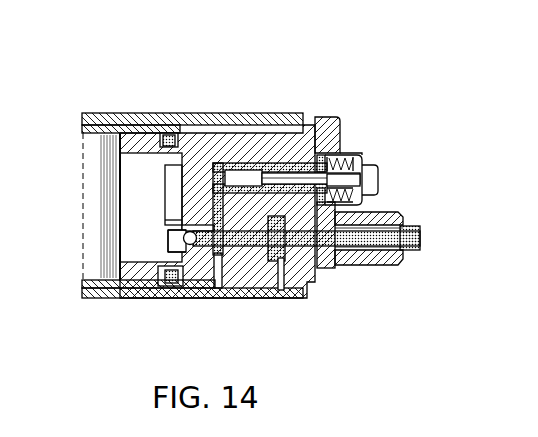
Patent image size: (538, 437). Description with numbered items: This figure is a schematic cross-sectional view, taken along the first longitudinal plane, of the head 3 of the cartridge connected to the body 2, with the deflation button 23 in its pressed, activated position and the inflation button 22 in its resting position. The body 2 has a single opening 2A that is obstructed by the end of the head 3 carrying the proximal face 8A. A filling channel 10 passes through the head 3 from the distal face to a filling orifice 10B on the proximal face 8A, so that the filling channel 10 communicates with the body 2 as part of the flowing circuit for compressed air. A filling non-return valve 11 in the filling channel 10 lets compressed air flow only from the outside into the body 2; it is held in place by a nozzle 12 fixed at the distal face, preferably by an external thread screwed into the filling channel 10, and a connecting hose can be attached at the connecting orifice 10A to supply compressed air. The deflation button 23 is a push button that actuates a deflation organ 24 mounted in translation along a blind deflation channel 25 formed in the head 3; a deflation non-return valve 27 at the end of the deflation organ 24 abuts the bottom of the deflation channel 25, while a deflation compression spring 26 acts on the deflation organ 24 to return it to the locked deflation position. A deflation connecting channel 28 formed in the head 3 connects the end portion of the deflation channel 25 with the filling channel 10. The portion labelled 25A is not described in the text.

The body 2 is at (112, 113).
The single opening 2A is at (167, 115).
The head 3 is at (308, 298).
The proximal face 8A is at (183, 207).
The filling channel 10 is at (282, 290).
The connecting orifice 10A is at (234, 239).
The filling orifice 10B is at (180, 247).
The filling non-return valve 11 is at (194, 252).
The nozzle 12 is at (330, 267).
The inflation button 22 is at (360, 205).
The deflation button 23 is at (346, 151).
The deflation organ 24 is at (285, 177).
The deflation channel 25 is at (260, 165).
The valve member collar 25A is at (291, 141).
The deflation compression spring 26 is at (328, 117).
The deflation non-return valve 27 is at (232, 157).
The deflation connecting channel 28 is at (203, 206).